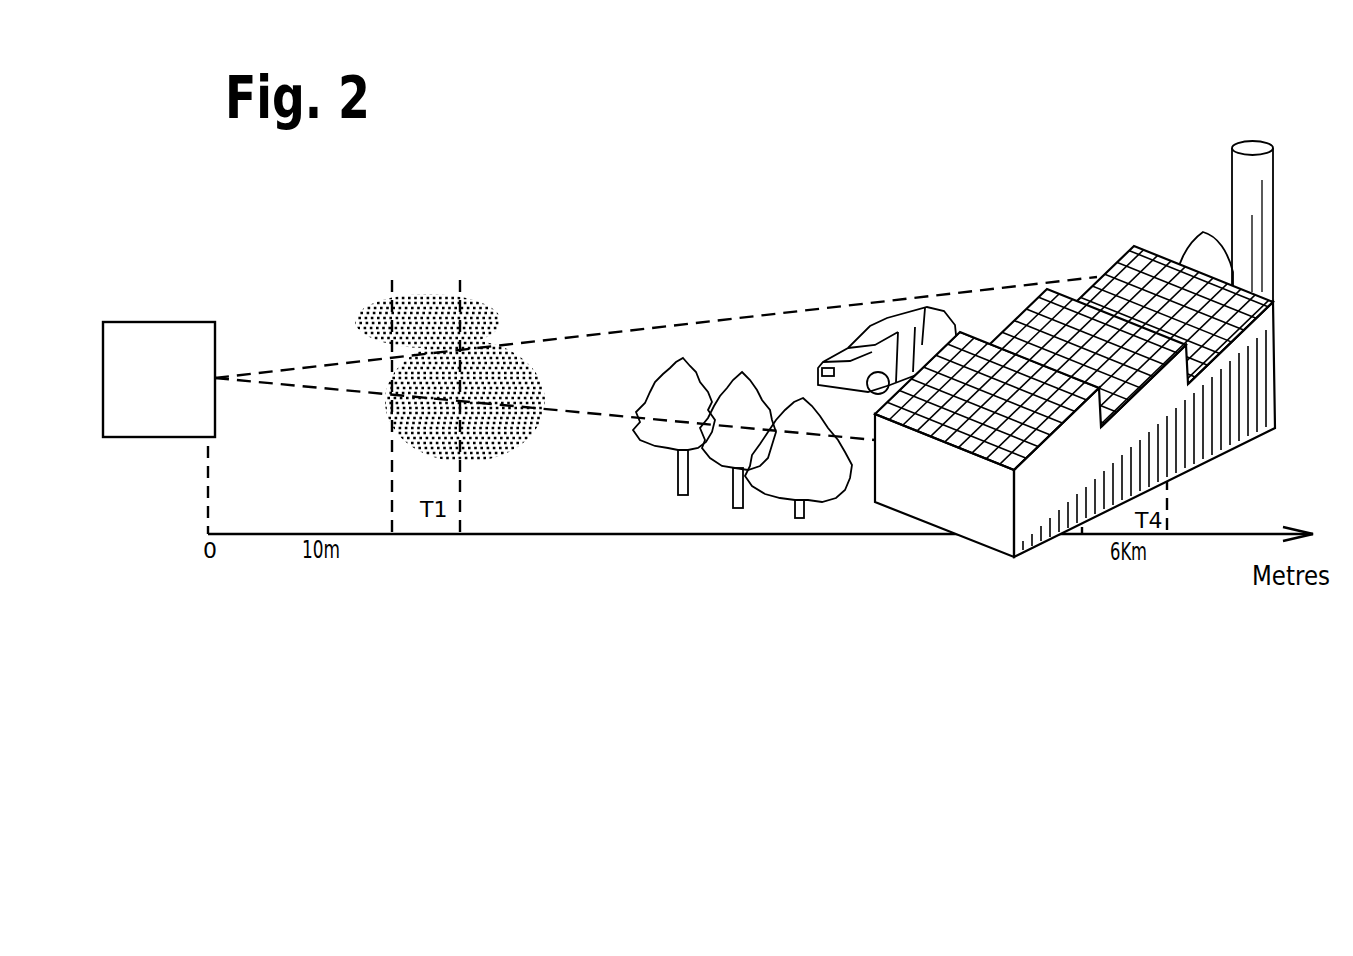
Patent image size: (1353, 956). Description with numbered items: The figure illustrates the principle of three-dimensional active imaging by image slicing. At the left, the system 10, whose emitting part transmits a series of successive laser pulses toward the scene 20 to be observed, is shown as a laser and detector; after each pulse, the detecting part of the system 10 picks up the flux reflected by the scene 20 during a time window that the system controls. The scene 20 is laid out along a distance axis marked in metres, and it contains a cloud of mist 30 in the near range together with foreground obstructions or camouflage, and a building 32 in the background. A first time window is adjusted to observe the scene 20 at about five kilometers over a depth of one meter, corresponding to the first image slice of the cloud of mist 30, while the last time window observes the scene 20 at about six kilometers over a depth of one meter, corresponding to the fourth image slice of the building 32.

The system 10 is at (182, 325).
The cloud of mist 30 is at (490, 320).
The scene 20 is at (678, 545).
The building 32 is at (1002, 307).